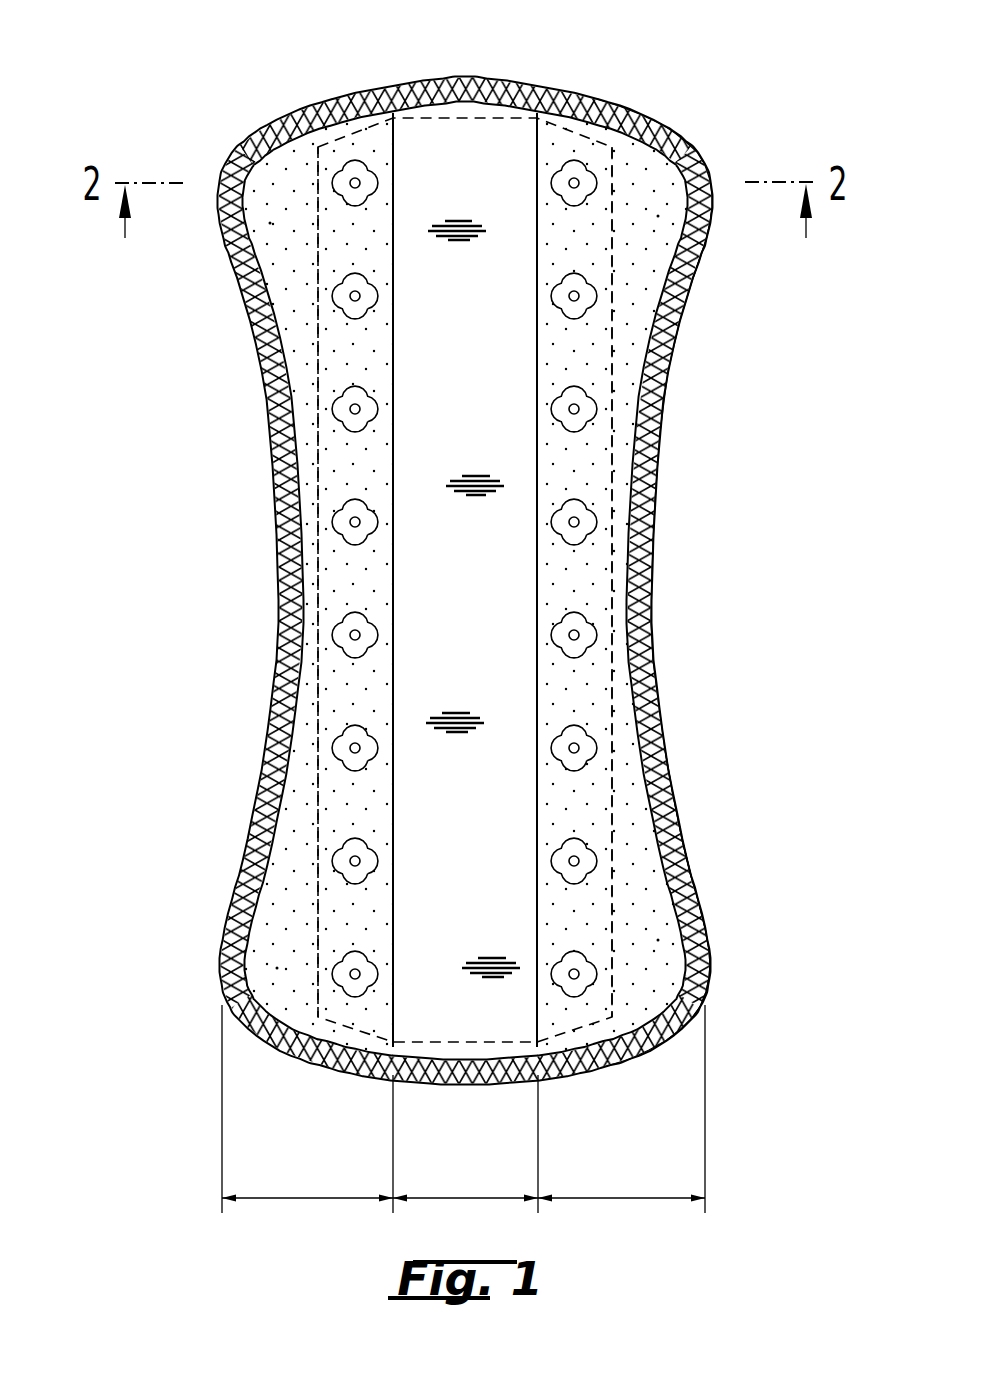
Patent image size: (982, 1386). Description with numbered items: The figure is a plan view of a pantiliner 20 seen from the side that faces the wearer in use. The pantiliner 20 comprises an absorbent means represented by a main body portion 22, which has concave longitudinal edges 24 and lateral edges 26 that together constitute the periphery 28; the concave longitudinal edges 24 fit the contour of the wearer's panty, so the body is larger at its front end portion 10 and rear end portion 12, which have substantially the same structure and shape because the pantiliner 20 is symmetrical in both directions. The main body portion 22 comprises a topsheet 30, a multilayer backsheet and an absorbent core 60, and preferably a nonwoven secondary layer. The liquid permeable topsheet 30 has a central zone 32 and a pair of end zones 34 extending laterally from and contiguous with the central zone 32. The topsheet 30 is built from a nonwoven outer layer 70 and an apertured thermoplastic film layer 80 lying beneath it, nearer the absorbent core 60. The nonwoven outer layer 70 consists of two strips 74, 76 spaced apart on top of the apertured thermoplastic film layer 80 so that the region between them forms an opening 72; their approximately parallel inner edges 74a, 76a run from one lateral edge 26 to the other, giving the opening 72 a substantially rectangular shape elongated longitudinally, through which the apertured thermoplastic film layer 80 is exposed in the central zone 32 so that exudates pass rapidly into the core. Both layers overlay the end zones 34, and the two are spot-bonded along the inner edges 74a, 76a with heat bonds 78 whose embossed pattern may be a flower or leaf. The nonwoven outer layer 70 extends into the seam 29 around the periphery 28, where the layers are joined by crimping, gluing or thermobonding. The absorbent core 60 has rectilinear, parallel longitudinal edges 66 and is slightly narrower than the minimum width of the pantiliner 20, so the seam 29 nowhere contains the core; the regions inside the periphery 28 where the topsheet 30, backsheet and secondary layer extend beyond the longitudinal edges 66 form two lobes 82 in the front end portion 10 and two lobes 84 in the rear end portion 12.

The front end portion 10 is at (722, 219).
The rear end portion 12 is at (732, 884).
The pantiliner 20 is at (236, 70).
The main body portion 22 is at (348, 92).
The longitudinal edges 24 is at (277, 513).
The lateral edges 26 is at (455, 78).
The periphery 28 is at (652, 606).
The seam 29 is at (713, 968).
The topsheet 30 is at (183, 827).
The central zone 32 is at (465, 1158).
The end zones 34 is at (463, 1123).
The absorbent core 60 is at (493, 147).
The longitudinal edges of absorbent core 66 is at (313, 177).
The nonwoven outer layer 70 is at (288, 882).
The opening 72 is at (488, 445).
The strip 74 is at (357, 467).
The inner edge 74a is at (394, 332).
The strip 76 is at (578, 469).
The inner edge 76a is at (536, 340).
The heat bonds 78 is at (350, 620).
The apertured thermoplastic film layer 80 is at (410, 820).
The lobes 82 is at (270, 223).
The lobes 84 is at (277, 968).